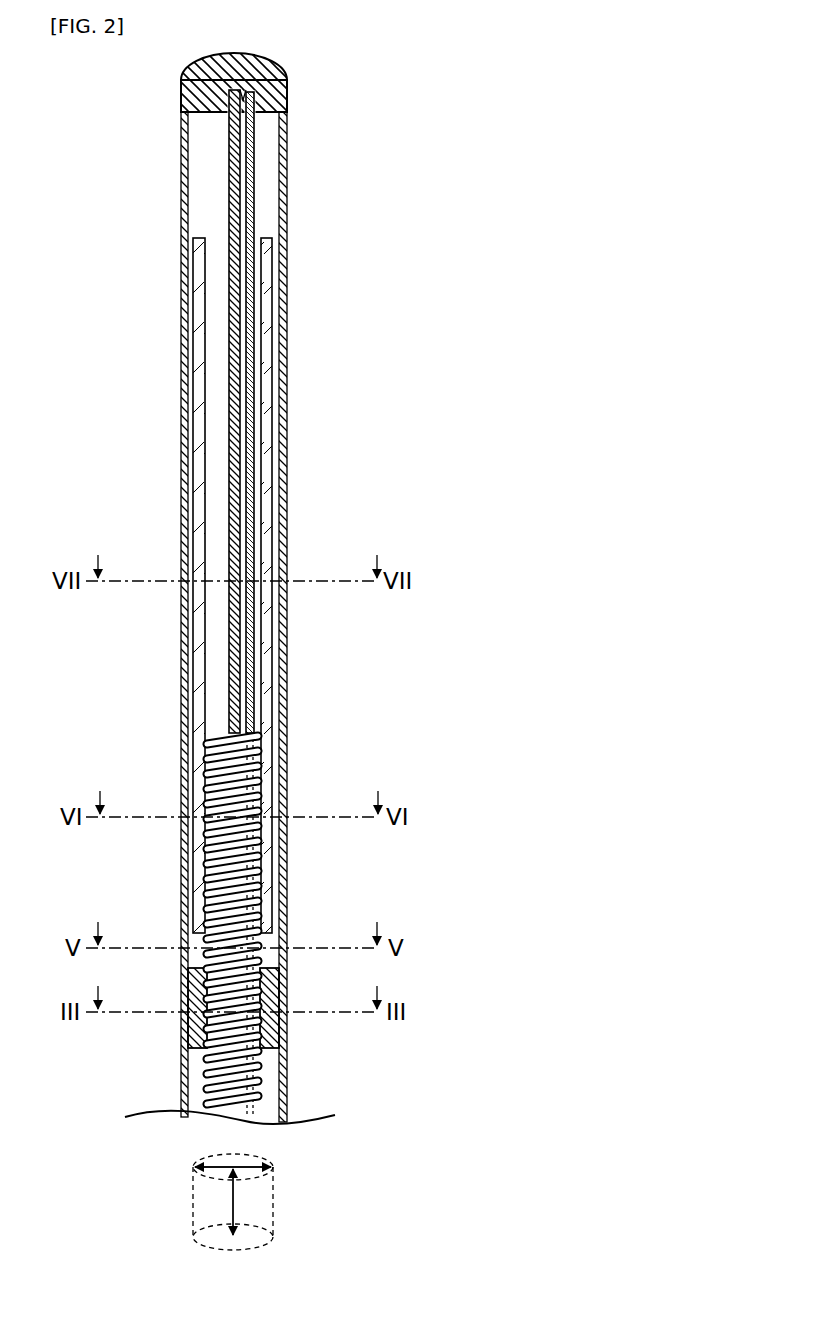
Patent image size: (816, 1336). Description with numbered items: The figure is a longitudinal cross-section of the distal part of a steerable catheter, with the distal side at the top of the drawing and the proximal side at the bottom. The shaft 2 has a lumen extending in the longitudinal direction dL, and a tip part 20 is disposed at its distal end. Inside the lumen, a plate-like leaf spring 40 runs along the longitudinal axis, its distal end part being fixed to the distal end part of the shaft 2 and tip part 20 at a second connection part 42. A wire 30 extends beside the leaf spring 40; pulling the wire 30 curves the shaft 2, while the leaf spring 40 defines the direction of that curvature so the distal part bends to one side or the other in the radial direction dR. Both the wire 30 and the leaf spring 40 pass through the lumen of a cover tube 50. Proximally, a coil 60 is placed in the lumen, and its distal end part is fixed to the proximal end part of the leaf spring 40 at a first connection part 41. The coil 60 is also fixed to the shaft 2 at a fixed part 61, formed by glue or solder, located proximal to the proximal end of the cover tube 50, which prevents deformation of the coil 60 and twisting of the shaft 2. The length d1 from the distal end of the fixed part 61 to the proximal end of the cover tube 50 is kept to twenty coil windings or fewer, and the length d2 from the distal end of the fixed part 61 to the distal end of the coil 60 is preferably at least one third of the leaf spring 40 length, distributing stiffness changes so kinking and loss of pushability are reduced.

The shaft 2 is at (210, 618).
The tip part 20 is at (181, 96).
The second connection part 42 is at (181, 82).
The leaf spring 40 is at (229, 183).
The wire 30 is at (254, 150).
The cover tube 50 is at (195, 268).
The first connection part 41 is at (257, 733).
The fixed part 61 is at (188, 1012).
The coil 60 is at (185, 1068).
The length from the distal end of the fixed part to the proximal end of the cover tu d1 is at (285, 935).
The length from the distal end of the fixed part to the distal end of the coil d2 is at (192, 967).
The radial direction dR is at (250, 1165).
The longitudinal direction dL is at (233, 1200).